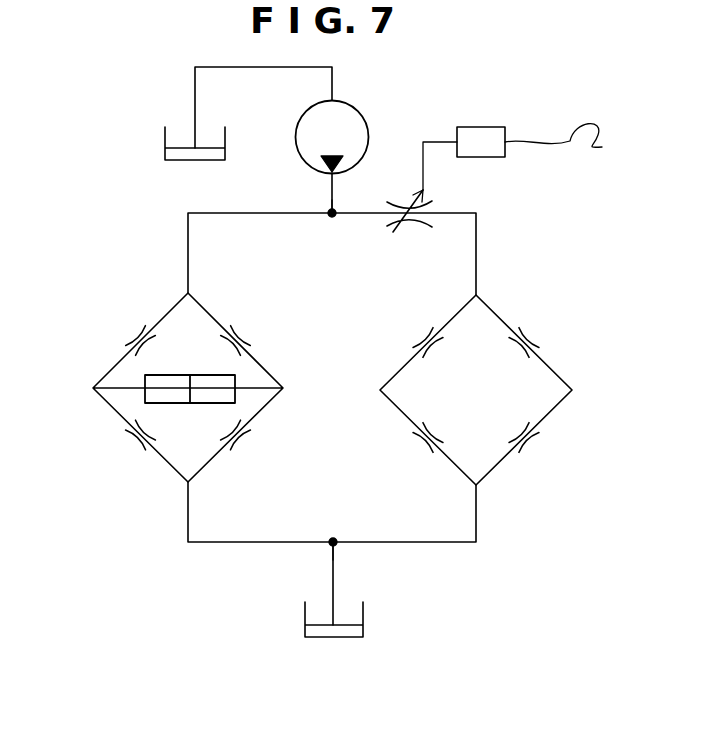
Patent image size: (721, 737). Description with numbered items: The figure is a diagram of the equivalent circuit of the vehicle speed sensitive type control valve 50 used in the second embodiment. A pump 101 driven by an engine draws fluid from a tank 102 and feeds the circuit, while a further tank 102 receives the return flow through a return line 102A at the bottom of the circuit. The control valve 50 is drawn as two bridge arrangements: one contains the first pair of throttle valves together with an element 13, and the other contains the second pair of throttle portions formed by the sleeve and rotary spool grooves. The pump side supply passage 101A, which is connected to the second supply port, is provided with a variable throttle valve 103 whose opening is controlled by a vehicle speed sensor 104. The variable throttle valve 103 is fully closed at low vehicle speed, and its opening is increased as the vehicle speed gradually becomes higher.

The control valve 50 is at (97, 280).
The variable restrictor / control element 13 is at (203, 373).
The pump 101 is at (300, 126).
The pump side supply passage 101A is at (331, 207).
The tank 102 is at (165, 141).
The return line 102A is at (336, 563).
The variable throttle valve 103 is at (447, 204).
The vehicle speed sensor 104 is at (478, 127).